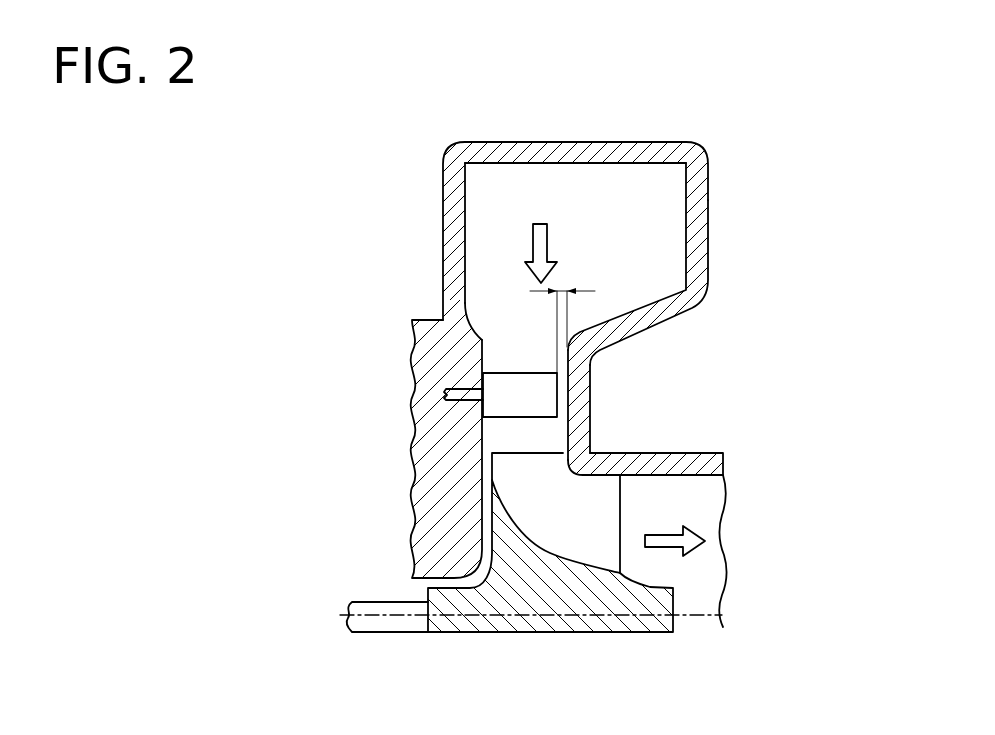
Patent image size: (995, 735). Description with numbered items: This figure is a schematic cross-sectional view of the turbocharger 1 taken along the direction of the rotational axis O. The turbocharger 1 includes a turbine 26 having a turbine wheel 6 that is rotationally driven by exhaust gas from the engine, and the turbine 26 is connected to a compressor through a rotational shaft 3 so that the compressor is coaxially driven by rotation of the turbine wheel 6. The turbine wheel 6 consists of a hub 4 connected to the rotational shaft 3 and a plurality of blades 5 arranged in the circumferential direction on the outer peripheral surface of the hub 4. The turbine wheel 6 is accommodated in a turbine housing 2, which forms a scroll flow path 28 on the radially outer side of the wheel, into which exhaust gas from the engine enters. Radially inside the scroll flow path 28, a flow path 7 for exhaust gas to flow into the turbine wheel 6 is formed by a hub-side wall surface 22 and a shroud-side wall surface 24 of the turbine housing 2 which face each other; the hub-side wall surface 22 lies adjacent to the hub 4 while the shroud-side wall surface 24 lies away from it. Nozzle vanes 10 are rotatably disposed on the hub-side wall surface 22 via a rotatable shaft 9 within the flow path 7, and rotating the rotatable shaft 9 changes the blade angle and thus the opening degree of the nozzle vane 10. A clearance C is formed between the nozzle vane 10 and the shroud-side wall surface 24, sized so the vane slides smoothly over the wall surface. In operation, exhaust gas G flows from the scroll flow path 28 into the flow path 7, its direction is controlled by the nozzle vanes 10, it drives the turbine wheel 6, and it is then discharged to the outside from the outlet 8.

The turbocharger 1 is at (299, 88).
The turbine housing 2 is at (710, 190).
The rotational shaft 3 is at (391, 633).
The hub 4 is at (619, 627).
The blades 5 is at (570, 537).
The turbine wheel 6 is at (685, 597).
The flow path 7 is at (503, 430).
The outlet 8 is at (683, 570).
The rotatable shaft 9 is at (457, 388).
The nozzle vane 10 is at (543, 400).
The hub-side wall surface 22 is at (477, 345).
The shroud-side wall surface 24 is at (573, 366).
The turbine 26 is at (720, 113).
The scroll flow path 28 is at (642, 182).
The exhaust gas G is at (552, 237).
The clearance C is at (563, 283).
The rotational axis O is at (700, 618).